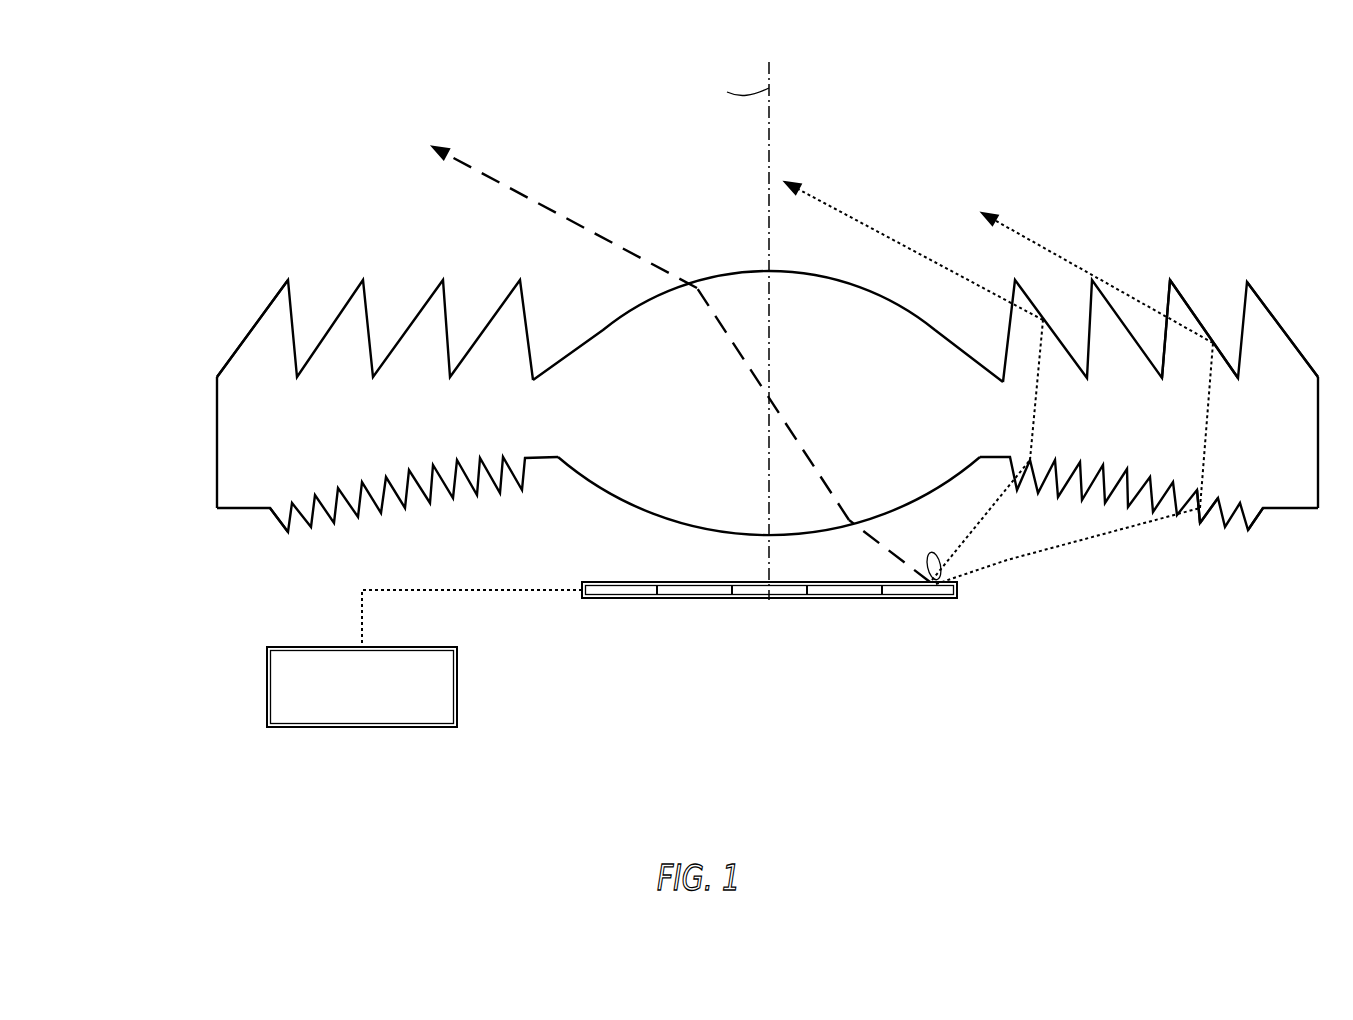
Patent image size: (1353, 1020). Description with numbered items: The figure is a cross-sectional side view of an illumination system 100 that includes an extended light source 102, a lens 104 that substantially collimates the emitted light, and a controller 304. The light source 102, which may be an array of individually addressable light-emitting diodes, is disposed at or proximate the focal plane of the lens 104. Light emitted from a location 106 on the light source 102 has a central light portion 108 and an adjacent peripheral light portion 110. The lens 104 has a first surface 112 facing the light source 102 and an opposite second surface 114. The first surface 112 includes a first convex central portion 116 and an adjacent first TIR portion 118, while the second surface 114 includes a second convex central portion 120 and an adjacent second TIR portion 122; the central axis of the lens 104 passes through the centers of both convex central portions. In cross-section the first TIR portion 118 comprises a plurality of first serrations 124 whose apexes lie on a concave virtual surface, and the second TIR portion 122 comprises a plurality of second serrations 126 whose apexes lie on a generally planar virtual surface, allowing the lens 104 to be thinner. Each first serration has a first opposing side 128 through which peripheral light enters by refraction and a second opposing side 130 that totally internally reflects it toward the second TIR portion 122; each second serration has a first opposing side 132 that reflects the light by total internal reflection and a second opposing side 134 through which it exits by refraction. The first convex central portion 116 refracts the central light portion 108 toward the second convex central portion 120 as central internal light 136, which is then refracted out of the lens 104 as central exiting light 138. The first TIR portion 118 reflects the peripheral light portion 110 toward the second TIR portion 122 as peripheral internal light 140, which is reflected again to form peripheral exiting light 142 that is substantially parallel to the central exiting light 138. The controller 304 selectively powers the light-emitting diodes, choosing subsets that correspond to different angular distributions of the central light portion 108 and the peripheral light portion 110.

The illumination system 100 is at (165, 175).
The light source 102 is at (768, 600).
The lens 104 is at (98, 273).
The location 106 is at (940, 584).
The central light portion 108 is at (889, 553).
The peripheral light portion 110 is at (983, 511).
The first surface 112 is at (173, 443).
The second surface 114 is at (173, 273).
The first convex central portion 116 is at (603, 490).
The first TIR portion 118 is at (268, 537).
The second convex central portion 120 is at (603, 330).
The second TIR portion 122 is at (268, 255).
The first serrations 124 is at (257, 534).
The second serrations 126 is at (236, 300).
The first opposing side 128 is at (1197, 515).
The second opposing side 130 is at (1202, 519).
The first opposing side 132 is at (1185, 298).
The second opposing side 134 is at (1166, 298).
The central internal light 136 is at (737, 345).
The central exiting light 138 is at (567, 215).
The peripheral internal light 140 is at (1033, 409).
The peripheral exiting light 142 is at (845, 213).
The controller 304 is at (267, 685).